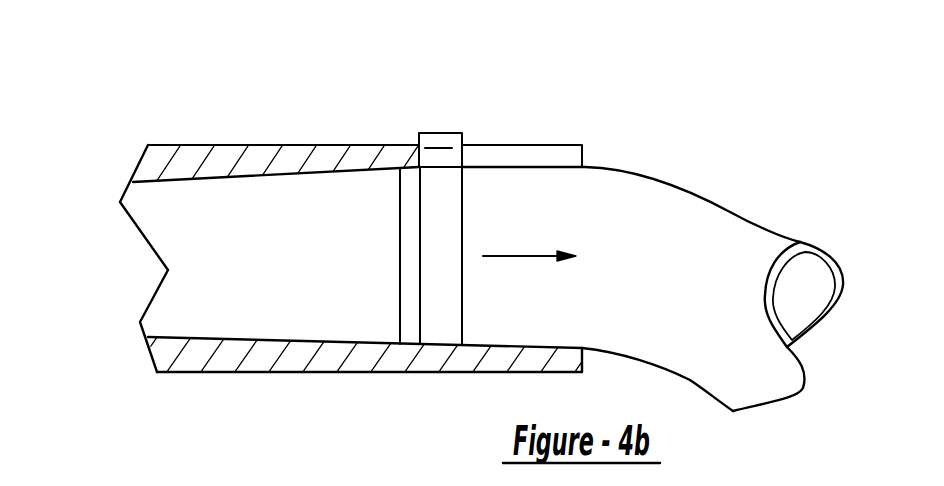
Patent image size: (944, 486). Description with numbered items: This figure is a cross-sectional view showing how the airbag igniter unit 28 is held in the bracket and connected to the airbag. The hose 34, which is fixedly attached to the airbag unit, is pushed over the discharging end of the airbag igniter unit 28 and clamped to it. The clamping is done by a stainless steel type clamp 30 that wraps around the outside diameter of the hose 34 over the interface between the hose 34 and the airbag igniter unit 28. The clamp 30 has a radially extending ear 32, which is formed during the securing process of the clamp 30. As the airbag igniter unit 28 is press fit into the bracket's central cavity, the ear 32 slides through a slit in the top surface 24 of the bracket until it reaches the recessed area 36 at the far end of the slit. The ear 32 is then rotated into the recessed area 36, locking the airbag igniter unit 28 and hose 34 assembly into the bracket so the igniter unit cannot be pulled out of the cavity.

The top surface 24 is at (517, 146).
The airbag igniter unit 28 is at (270, 228).
The clamp 30 is at (420, 227).
The ear 32 is at (446, 130).
The hose 34 is at (676, 245).
The recessed area 36 is at (417, 158).